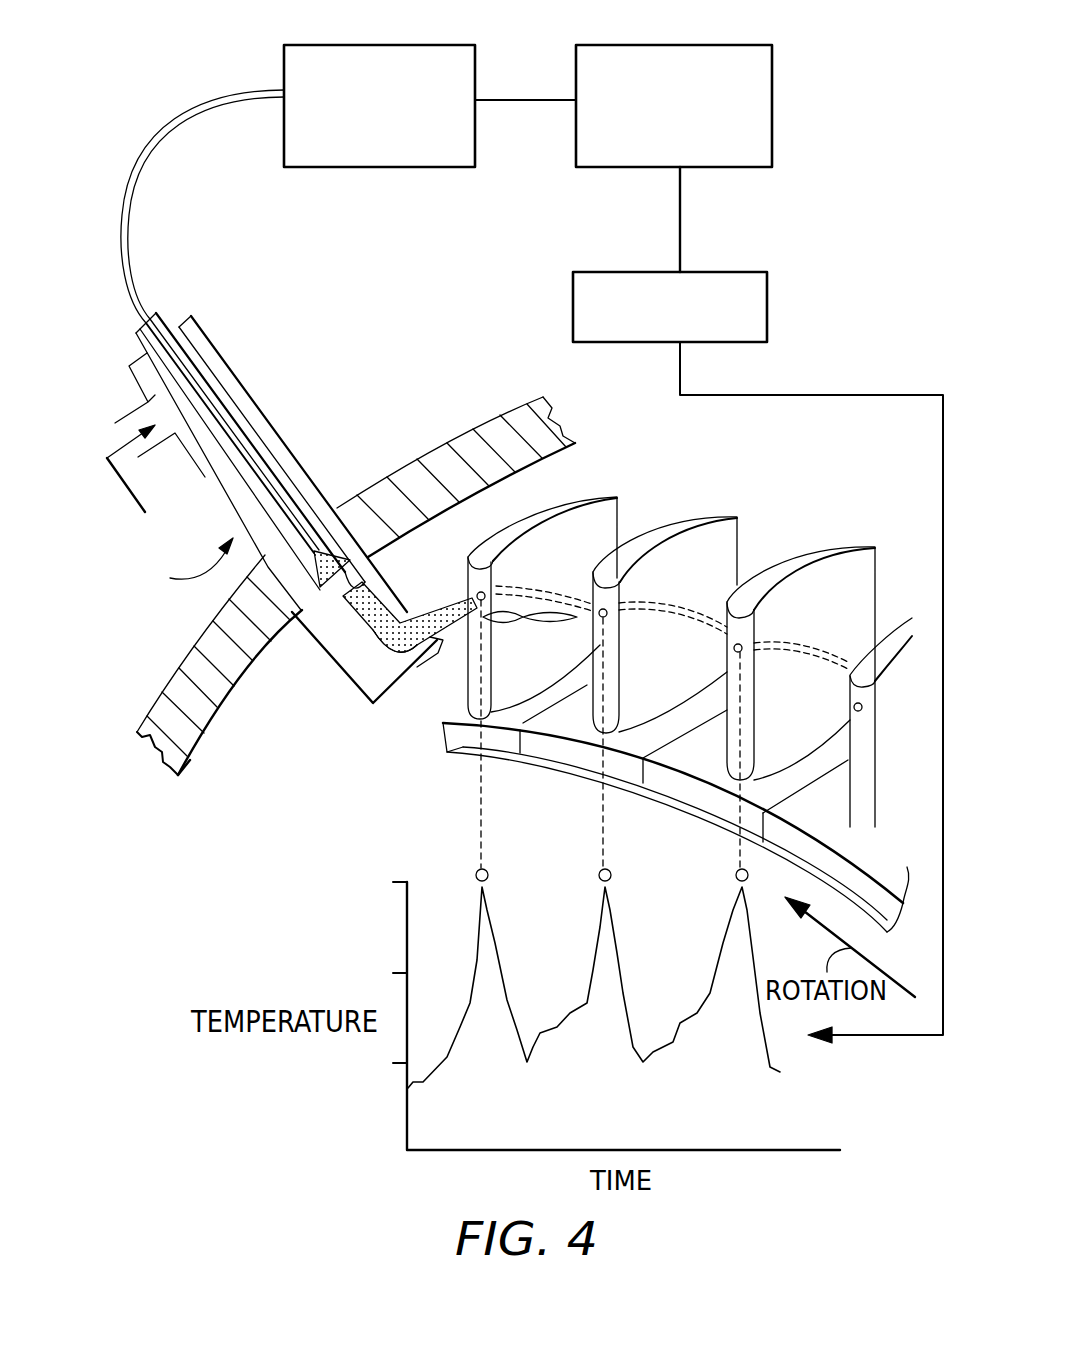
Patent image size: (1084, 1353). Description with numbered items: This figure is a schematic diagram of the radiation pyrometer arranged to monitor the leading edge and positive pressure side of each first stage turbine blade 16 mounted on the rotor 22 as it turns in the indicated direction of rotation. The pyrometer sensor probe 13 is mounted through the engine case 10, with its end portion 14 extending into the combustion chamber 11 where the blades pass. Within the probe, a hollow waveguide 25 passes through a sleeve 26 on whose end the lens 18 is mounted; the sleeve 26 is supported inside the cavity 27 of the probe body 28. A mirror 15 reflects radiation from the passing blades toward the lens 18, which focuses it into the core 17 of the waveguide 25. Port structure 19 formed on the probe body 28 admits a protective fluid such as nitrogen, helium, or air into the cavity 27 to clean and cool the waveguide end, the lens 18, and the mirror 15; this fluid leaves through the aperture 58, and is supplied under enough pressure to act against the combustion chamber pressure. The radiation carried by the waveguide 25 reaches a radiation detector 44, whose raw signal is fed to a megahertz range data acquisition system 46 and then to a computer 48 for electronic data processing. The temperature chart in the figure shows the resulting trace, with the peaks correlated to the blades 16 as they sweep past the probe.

The engine case 10 is at (183, 656).
The combustion chamber 11 is at (200, 740).
The pyrometer sensor probe 13 is at (185, 565).
The end portion of the probe 14 is at (373, 703).
The mirror 15 is at (400, 628).
The blade 16 is at (782, 563).
The core of the waveguide 17 is at (197, 383).
The lens 18 is at (338, 593).
The port structure 19 is at (133, 418).
The rotor 22 is at (465, 745).
The hollow waveguide 25 is at (137, 168).
The sleeve 26 is at (243, 432).
The cavity 27 is at (202, 342).
The probe body 28 is at (320, 617).
The radiation detector 44 is at (477, 88).
The megahertz range data acquisition system 46 is at (672, 45).
The computer 48 is at (767, 307).
The aperture 58 is at (425, 680).